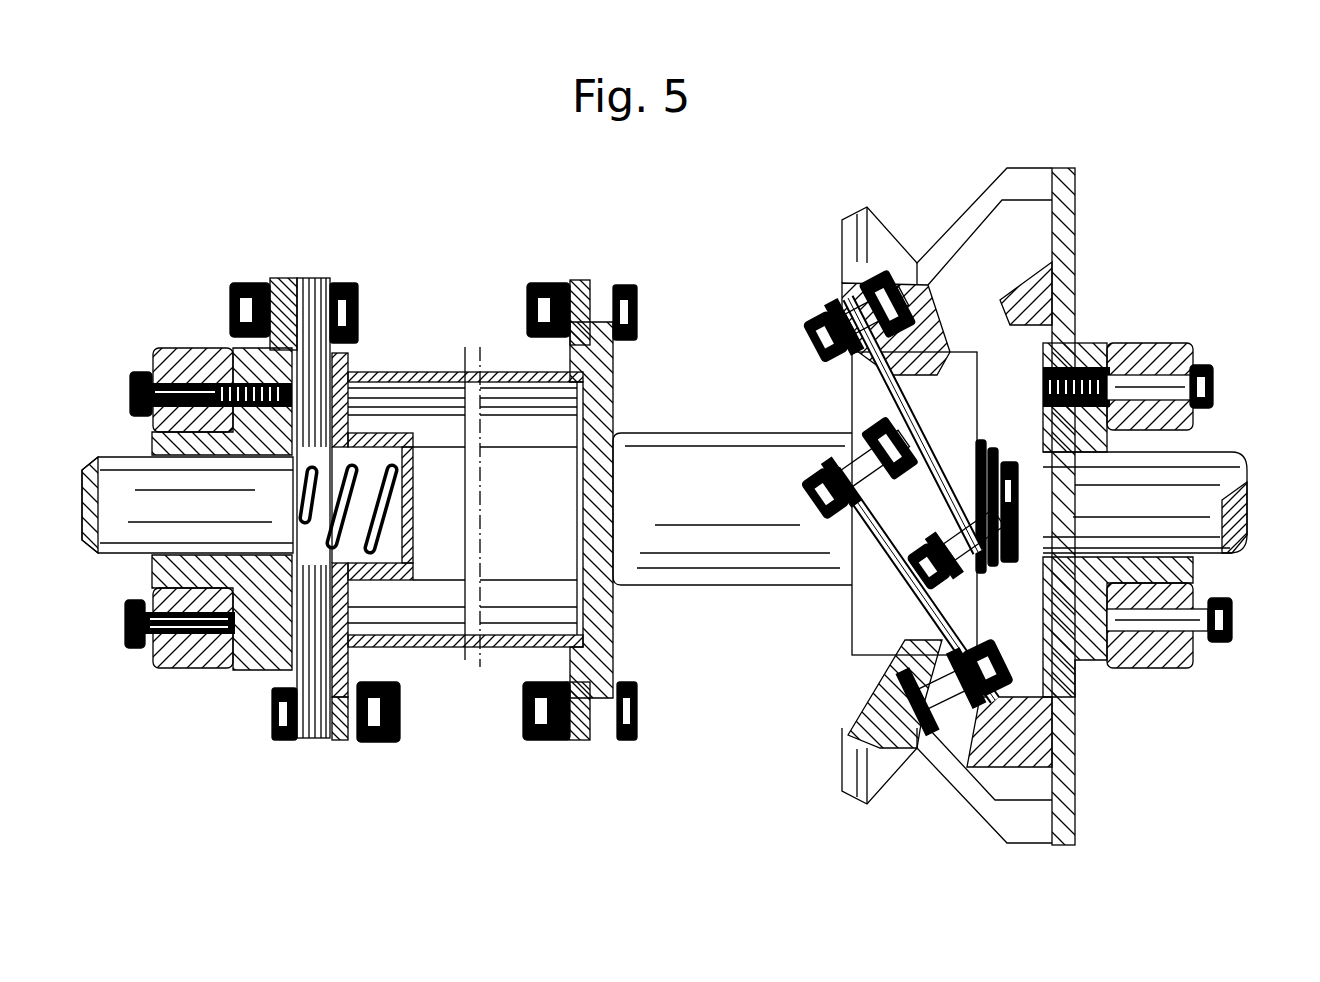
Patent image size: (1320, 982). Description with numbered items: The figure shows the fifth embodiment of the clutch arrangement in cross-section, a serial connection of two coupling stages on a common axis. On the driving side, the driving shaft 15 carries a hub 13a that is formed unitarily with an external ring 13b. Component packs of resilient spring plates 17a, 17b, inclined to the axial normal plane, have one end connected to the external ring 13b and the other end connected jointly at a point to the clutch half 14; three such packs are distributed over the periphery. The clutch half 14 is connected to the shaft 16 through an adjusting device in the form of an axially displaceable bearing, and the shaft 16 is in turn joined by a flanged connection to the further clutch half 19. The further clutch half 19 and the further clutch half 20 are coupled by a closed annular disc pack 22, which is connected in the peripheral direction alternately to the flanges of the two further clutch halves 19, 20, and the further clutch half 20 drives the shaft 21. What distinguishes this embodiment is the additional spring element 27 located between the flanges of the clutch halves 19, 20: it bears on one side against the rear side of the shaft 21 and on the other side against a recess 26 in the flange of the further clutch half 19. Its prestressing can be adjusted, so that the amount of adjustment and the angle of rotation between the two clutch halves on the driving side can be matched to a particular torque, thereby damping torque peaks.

The hub 13a is at (1077, 190).
The external ring 13b is at (862, 227).
The clutch half 14 is at (847, 582).
The driving shaft 15 is at (1218, 463).
The shaft 16 is at (705, 450).
The spring plate 17a is at (907, 405).
The spring plate 17b is at (905, 628).
The further clutch half 19 is at (362, 370).
The further clutch half 20 is at (208, 500).
The shaft to be driven 21 is at (120, 473).
The closed annular disc pack 22 is at (320, 277).
The recess 26 is at (413, 437).
The spring element 27 is at (270, 657).